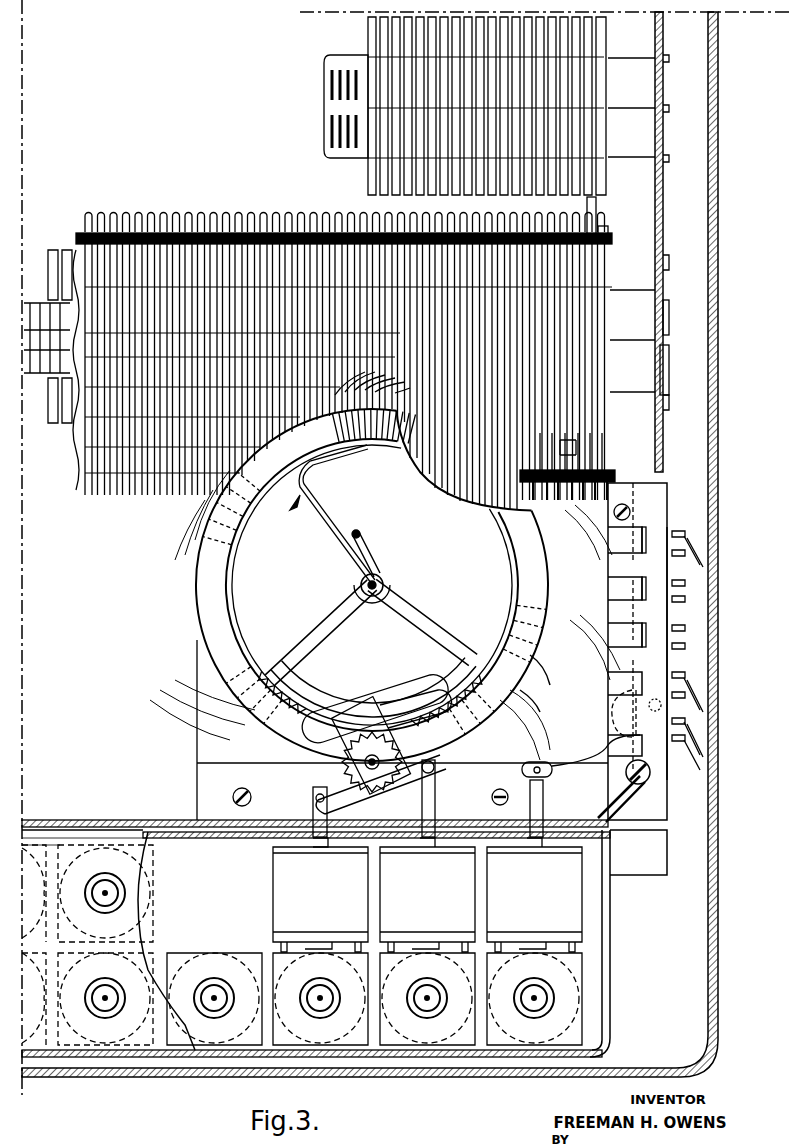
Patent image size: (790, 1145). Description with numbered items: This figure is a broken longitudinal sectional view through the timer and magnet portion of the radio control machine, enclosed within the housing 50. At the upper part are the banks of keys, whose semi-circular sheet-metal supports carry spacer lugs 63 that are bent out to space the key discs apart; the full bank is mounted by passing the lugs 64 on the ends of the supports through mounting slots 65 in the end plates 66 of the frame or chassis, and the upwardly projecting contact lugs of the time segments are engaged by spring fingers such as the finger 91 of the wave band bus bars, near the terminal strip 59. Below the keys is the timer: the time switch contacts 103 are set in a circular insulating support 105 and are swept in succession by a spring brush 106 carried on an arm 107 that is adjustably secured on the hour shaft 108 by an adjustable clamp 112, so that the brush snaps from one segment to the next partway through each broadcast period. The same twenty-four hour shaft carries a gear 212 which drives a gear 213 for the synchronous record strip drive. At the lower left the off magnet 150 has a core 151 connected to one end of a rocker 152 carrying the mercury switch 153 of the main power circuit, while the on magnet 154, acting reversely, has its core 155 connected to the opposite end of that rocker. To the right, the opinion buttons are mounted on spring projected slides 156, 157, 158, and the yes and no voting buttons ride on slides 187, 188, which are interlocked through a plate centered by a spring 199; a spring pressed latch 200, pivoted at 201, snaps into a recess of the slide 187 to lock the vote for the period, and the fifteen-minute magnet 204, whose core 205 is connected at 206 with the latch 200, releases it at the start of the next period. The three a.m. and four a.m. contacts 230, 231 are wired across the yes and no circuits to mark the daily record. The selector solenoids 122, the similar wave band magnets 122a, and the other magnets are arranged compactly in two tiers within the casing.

The housing frame 50 is at (718, 232).
The end plate 66 is at (665, 264).
The mounting slot 65 is at (669, 325).
The lug 64 is at (669, 350).
The spacer lug 63 is at (609, 163).
The terminal strip 59 is at (599, 212).
The spring finger 91 is at (608, 228).
The circular insulating support 105 is at (206, 582).
The time switch contact 103 is at (252, 515).
The spring brush 106 is at (360, 462).
The arm 107 is at (337, 538).
The adjustable clamp 112 is at (362, 548).
The hour shaft 108 is at (386, 580).
The gear 212 is at (272, 655).
The gear 213 is at (409, 747).
The mercury switch 153 is at (383, 695).
The rocker 152 is at (312, 790).
The core 151 is at (312, 800).
The core 155 is at (434, 812).
The core 205 is at (546, 812).
The connection 206 is at (522, 771).
The spring pressed latch 200 is at (592, 742).
The slide 188 is at (630, 740).
The pivot 201 is at (640, 785).
The 3 a. m. contact 230 is at (542, 712).
The 4 a. m. contact 231 is at (552, 690).
The spring projected slide 156 is at (631, 513).
The spring projected slide 157 is at (644, 575).
The spring projected slide 158 is at (644, 622).
The slide 187 is at (644, 668).
The spring 199 is at (672, 684).
The solenoid 122 is at (576, 1010).
The magnet 122a is at (143, 902).
The off magnet 150 is at (320, 899).
The on magnet 154 is at (427, 895).
The 15-minute magnet 204 is at (447, 895).